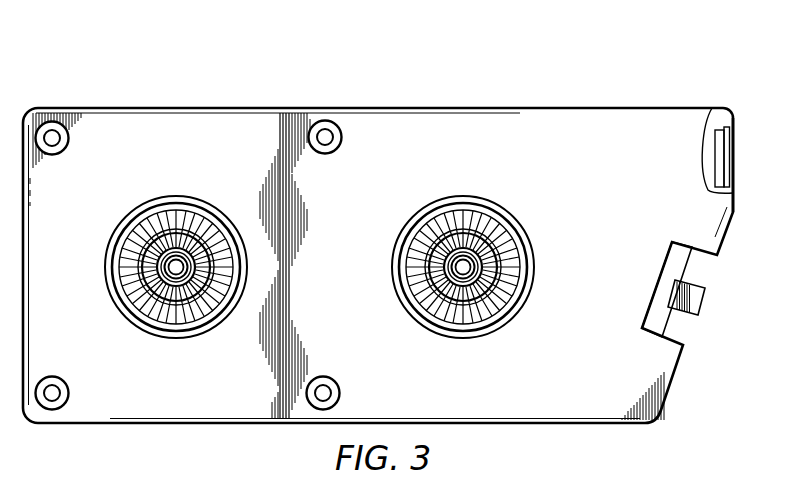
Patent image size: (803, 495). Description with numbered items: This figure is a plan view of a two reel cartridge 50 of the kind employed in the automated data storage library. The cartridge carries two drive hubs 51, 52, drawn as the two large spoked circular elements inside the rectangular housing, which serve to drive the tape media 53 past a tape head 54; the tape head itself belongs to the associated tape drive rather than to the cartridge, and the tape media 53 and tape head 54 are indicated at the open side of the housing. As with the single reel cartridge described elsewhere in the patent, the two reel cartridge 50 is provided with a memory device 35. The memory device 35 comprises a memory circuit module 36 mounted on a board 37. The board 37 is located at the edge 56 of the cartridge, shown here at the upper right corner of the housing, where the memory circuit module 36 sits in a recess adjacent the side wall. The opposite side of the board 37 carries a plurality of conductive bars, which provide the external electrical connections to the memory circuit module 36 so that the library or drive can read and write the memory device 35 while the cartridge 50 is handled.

The two reel cartridge 50 is at (393, 70).
The drive hub 51 is at (147, 303).
The drive hub 52 is at (436, 304).
The tape media 53 is at (668, 322).
The tape head 54 is at (702, 286).
The memory device 35 is at (706, 150).
The memory circuit module 36 is at (717, 130).
The board 37 is at (734, 121).
The edge 56 is at (735, 193).